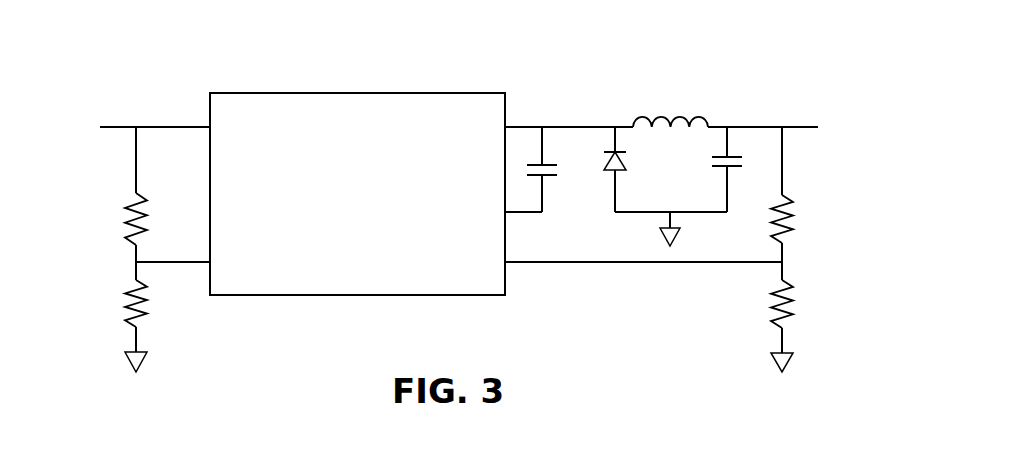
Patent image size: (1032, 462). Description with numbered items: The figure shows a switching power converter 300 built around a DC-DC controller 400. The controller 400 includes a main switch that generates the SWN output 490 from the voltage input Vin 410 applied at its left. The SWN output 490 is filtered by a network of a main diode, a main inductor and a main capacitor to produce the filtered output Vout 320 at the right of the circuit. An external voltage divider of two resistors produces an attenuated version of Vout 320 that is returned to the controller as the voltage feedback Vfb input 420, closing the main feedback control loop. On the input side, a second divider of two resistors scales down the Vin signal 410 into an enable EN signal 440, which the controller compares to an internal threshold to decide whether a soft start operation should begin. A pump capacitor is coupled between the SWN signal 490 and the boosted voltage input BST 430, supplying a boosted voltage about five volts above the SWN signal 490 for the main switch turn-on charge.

The switching power converter 300 is at (358, 70).
The filtered output Vout 320 is at (802, 124).
The DC-DC controller 400 is at (368, 221).
The voltage input Vin 410 is at (172, 124).
The Vfb input 420 is at (577, 265).
The boosted voltage input BST 430 is at (522, 215).
The enable (EN) signal 440 is at (180, 264).
The SWN output 490 is at (570, 125).